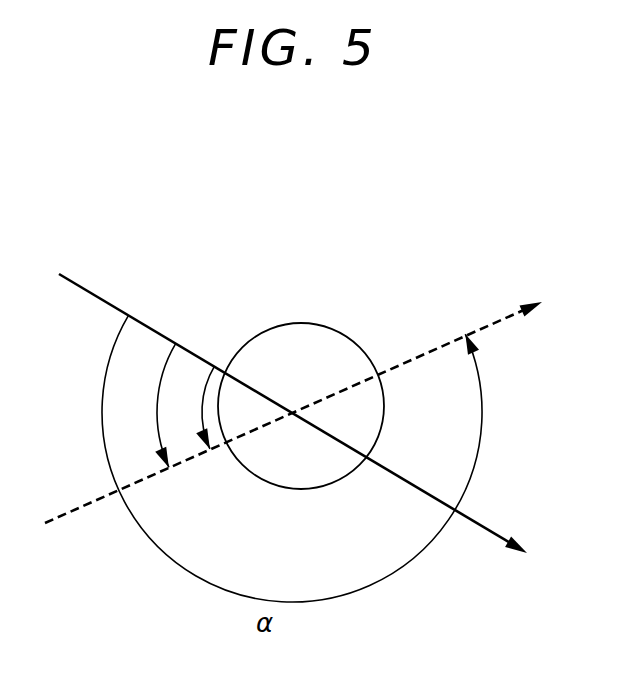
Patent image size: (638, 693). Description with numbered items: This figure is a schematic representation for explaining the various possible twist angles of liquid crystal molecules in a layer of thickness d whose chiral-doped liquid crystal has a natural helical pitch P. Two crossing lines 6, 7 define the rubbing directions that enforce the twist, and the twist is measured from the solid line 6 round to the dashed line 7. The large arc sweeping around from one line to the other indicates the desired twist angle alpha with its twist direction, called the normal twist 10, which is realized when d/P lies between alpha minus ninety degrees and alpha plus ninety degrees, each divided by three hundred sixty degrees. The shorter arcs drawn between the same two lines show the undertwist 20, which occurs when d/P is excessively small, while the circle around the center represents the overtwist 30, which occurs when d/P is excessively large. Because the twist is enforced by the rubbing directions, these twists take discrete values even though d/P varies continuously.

The first axis line 6 is at (493, 533).
The second axis line (dashed) 7 is at (480, 327).
The normal twist 10 is at (337, 602).
The undertwist 20 is at (164, 367).
The overtwist 30 is at (362, 350).